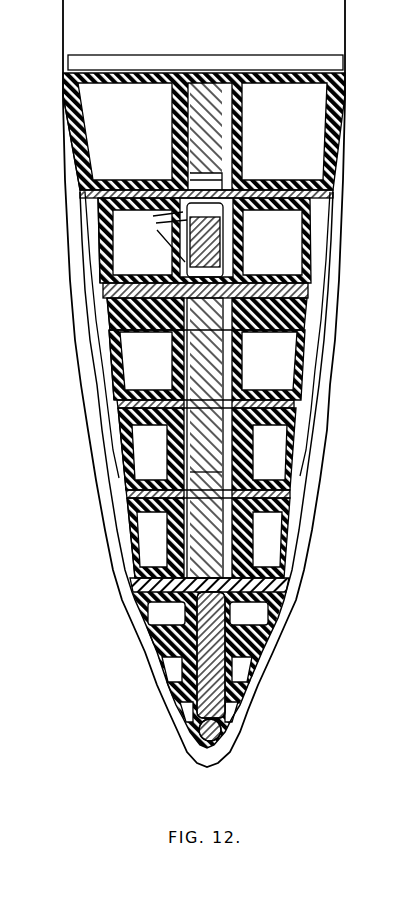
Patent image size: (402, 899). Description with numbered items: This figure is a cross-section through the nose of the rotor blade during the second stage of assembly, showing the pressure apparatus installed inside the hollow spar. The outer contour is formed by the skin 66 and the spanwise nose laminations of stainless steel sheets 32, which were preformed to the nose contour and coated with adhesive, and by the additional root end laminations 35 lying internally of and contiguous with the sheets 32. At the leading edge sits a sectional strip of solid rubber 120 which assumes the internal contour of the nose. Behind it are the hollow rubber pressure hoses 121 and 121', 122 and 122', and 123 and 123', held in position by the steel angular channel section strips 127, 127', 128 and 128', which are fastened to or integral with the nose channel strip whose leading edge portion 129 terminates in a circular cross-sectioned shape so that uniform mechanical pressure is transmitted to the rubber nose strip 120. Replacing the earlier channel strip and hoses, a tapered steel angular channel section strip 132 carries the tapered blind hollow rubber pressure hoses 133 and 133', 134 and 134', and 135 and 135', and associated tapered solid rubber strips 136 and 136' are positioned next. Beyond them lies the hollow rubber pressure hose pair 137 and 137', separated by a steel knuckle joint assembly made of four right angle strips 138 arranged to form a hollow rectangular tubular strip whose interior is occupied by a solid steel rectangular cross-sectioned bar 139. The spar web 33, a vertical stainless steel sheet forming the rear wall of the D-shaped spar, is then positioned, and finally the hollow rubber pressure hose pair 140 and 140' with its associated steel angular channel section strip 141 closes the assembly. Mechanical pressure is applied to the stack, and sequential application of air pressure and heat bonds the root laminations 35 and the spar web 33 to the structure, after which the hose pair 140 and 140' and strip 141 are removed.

The skin 66 is at (346, 32).
The stainless steel sheets 32 is at (224, 752).
The supplemental laminations of stainless steel sheets 35 is at (314, 380).
The hollow rubber pressure hose 140 is at (229, 131).
The hollow rubber pressure hose 140' is at (51, 142).
The steel angular channel section strip 141 is at (212, 118).
The spar web 33 is at (318, 199).
The hollow rubber pressure hose 137 is at (246, 240).
The hollow rubber pressure hose 137' is at (61, 240).
The solid steel rectangular cross-sectioned bar 139 is at (214, 240).
The right angle strips 138 is at (155, 237).
The tapered solid rubber strip 136 is at (248, 309).
The tapered solid rubber strip 136' is at (68, 314).
The blind hollow rubber pressure hose 135 is at (247, 365).
The blind hollow rubber pressure hose 135' is at (71, 365).
The tapered steel angular channel section strip 132 is at (214, 443).
The blind hollow rubber pressure hose 134 is at (241, 449).
The blind hollow rubber pressure hose 134' is at (86, 449).
The blind hollow rubber pressure hose 133 is at (241, 538).
The blind hollow rubber pressure hose 133' is at (99, 538).
The hollow rubber pressure hose 123 is at (237, 609).
The hollow rubber pressure hose 123' is at (130, 620).
The steel angular channel section strip 128 is at (244, 638).
The steel angular channel section strip 128' is at (117, 644).
The hollow rubber pressure hose 122 is at (242, 663).
The hollow rubber pressure hose 122' is at (135, 671).
The steel angular channel section strip 127 is at (245, 692).
The steel angular channel section strip 127' is at (135, 696).
The hollow rubber pressure hose 121 is at (243, 712).
The hollow rubber pressure hose 121' is at (147, 719).
The leading edge portion 129 is at (224, 733).
The sectional strip of solid rubber 120 is at (197, 742).